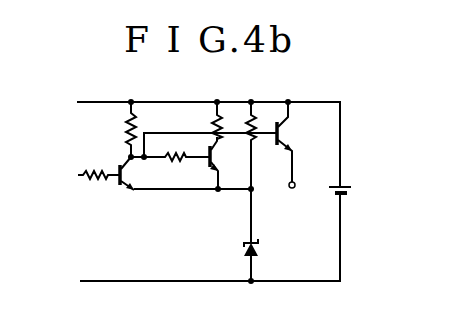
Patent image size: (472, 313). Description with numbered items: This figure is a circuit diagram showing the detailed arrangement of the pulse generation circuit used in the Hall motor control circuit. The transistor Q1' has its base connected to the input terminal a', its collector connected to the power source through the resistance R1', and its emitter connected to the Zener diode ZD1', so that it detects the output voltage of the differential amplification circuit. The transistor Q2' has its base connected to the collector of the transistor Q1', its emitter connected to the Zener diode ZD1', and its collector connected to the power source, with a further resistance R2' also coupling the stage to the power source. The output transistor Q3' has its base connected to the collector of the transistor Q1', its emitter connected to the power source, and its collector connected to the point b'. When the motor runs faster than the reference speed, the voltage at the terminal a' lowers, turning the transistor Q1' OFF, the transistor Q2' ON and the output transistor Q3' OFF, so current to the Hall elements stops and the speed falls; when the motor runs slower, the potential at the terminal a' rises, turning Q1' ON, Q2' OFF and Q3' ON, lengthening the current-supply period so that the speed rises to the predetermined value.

The resistance R1' is at (114, 129).
The resistance R2' is at (267, 145).
The transistor Q1' is at (139, 196).
The transistor Q2' is at (203, 163).
The output transistor Q3' is at (303, 142).
The Zener diode ZD1' is at (280, 236).
The terminal a' is at (82, 175).
The point b' is at (304, 197).